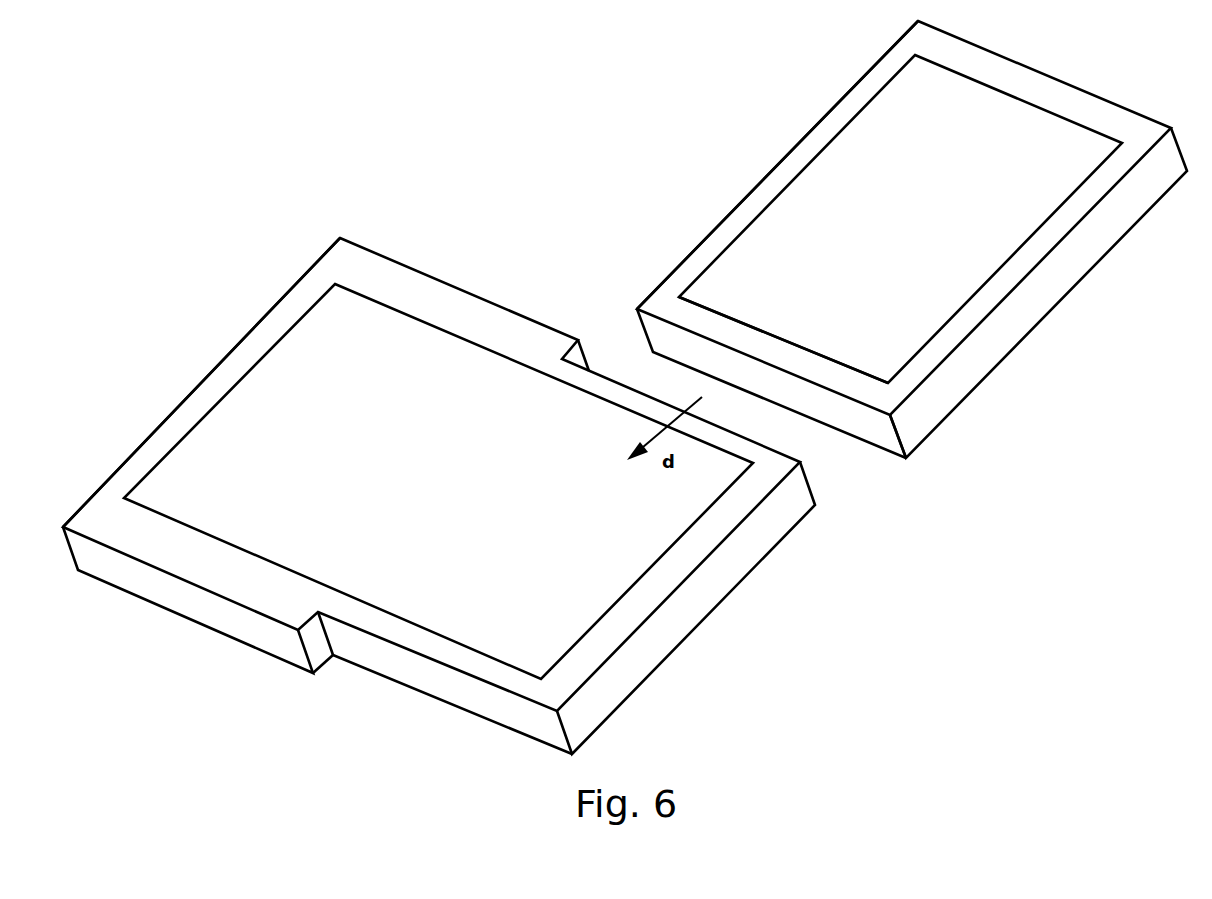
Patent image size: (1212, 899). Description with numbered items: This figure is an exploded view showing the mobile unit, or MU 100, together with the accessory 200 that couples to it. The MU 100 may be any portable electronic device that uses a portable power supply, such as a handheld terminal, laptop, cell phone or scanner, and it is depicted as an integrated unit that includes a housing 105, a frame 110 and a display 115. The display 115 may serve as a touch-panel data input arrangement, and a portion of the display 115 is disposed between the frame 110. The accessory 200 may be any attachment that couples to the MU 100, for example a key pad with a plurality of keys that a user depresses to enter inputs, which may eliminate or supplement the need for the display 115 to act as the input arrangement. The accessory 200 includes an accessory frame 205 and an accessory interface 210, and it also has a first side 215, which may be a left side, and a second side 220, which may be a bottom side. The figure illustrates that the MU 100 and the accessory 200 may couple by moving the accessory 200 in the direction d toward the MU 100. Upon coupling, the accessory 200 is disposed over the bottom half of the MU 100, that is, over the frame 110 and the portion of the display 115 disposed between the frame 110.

The MU 100 is at (388, 223).
The housing 105 is at (162, 425).
The frame 110 is at (410, 687).
The display 115 is at (560, 616).
The accessory 200 is at (1142, 84).
The accessory frame 205 is at (817, 125).
The accessory interface 210 is at (905, 318).
The first side 215 is at (732, 367).
The second side 220 is at (937, 414).